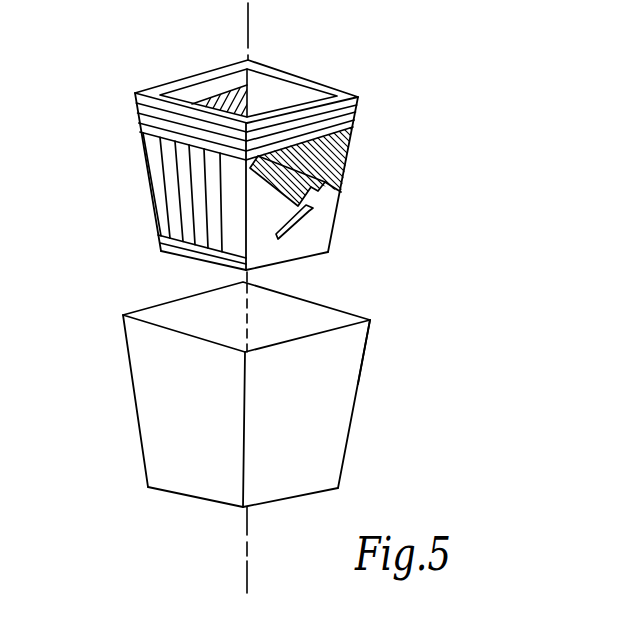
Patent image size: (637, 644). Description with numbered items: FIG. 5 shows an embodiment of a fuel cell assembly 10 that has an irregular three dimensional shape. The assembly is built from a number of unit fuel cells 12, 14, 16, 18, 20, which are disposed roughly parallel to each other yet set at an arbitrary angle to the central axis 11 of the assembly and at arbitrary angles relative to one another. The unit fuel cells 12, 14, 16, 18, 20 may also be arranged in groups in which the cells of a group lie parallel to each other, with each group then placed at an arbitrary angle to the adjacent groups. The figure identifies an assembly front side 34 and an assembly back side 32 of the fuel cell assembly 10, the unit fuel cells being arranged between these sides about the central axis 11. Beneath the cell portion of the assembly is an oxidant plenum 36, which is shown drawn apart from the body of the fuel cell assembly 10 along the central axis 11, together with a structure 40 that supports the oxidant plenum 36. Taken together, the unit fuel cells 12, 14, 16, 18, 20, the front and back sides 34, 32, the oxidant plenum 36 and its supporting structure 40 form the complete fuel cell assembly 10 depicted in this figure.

The fuel cell assembly 10 is at (348, 93).
The central axis 11 is at (247, 26).
The unit fuel cell 12 is at (355, 117).
The unit fuel cell 14 is at (343, 174).
The unit fuel cell 16 is at (312, 208).
The unit fuel cell 18 is at (161, 178).
The unit fuel cell 20 is at (158, 238).
The assembly back side 32 is at (139, 121).
The assembly front side 34 is at (292, 97).
The oxidant plenum 36 is at (333, 320).
The structure for supporting the oxidant plenum 40 is at (369, 331).